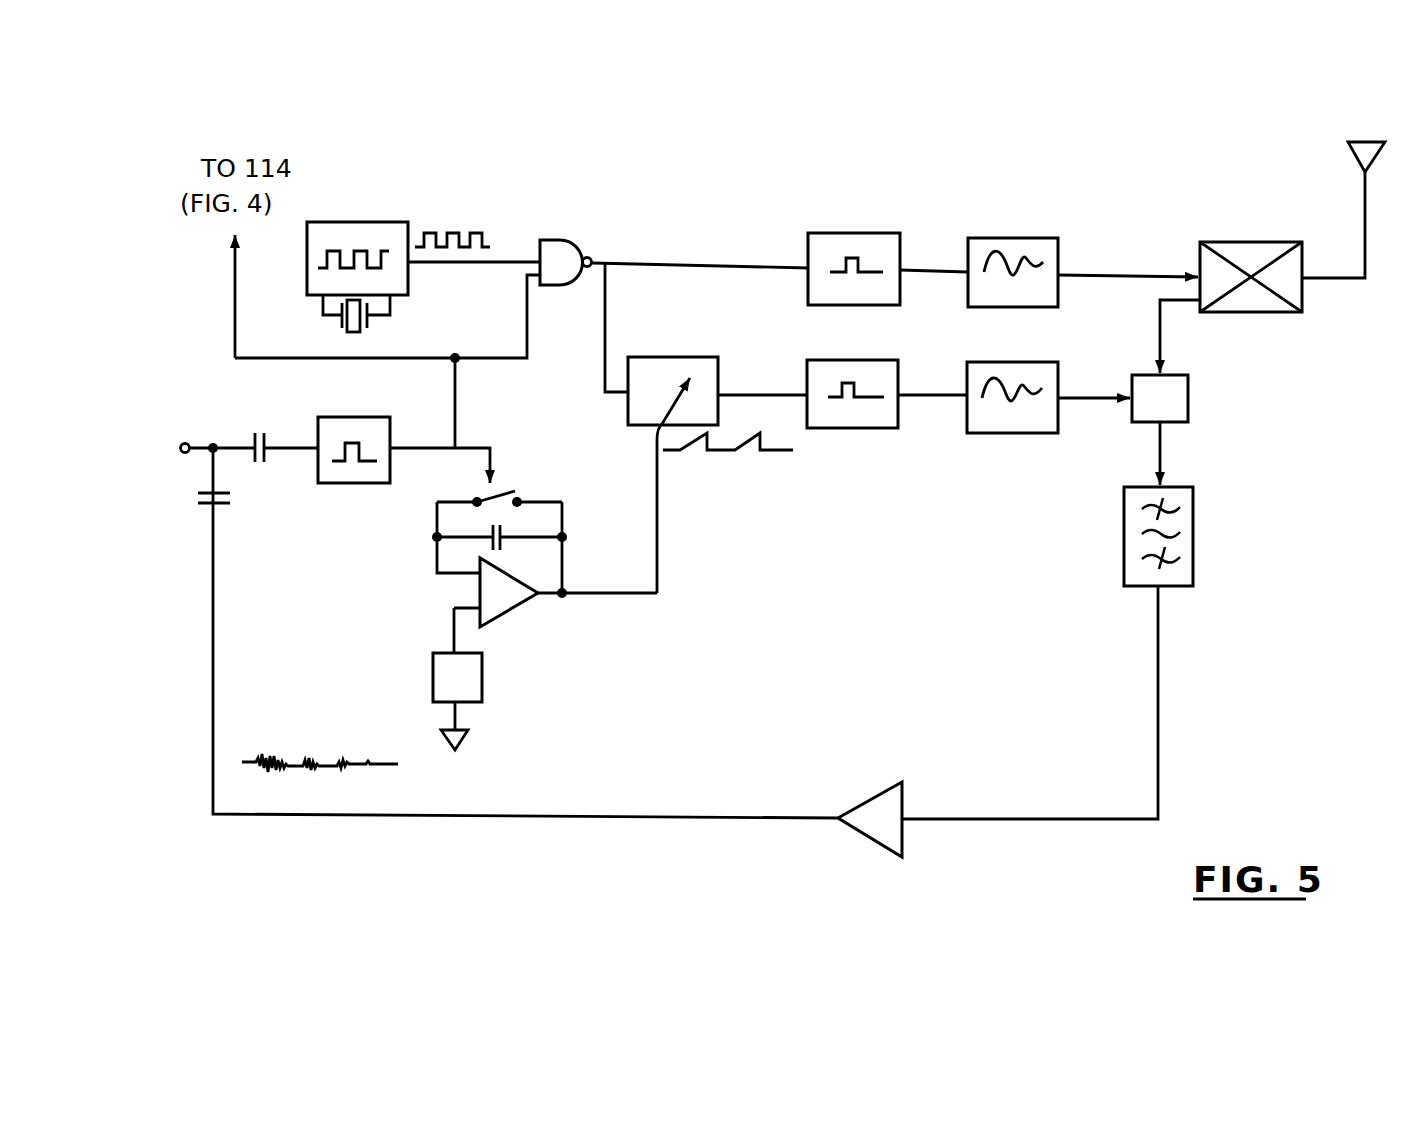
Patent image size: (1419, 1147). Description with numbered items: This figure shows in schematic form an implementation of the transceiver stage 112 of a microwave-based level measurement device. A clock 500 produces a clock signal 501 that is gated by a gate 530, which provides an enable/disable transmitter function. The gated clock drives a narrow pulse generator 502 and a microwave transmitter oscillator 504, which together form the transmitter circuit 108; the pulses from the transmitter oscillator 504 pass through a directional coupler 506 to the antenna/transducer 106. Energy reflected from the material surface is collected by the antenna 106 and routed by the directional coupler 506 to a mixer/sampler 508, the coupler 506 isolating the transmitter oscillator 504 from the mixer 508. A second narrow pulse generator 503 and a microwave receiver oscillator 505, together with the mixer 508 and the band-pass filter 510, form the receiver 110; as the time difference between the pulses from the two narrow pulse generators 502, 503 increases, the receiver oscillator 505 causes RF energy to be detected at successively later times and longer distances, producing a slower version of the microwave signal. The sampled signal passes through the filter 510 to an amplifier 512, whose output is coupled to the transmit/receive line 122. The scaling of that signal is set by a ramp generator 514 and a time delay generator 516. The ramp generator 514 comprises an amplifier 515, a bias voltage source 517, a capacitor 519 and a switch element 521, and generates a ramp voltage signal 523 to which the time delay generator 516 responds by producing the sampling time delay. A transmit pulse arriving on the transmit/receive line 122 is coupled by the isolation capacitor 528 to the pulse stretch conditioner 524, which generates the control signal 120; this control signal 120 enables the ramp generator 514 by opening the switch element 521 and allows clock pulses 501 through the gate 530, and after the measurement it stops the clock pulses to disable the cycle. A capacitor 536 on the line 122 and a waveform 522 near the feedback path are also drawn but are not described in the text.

The antenna/transducer 106 is at (1348, 153).
The transmitter circuit 108 is at (688, 218).
The receiver 110 is at (960, 494).
The transceiver stage 112 is at (288, 827).
The control signal 120 is at (458, 447).
The transmit/receive line 122 is at (185, 443).
The clock 500 is at (390, 222).
The clock signal 501 is at (487, 233).
The narrow pulse generator 502 is at (870, 233).
The second narrow pulse generator 503 is at (847, 360).
The microwave transmitter oscillator 504 is at (1047, 238).
The microwave receiver oscillator 505 is at (1002, 362).
The directional coupler 506 is at (1272, 242).
The mixer/sampler 508 is at (1190, 401).
The band-pass filter 510 is at (1193, 551).
The amplifier 512 is at (902, 795).
The ramp generator 514 is at (546, 650).
The amplifier 515 is at (528, 602).
The time delay generator 516 is at (670, 357).
The bias voltage source 517 is at (482, 677).
The capacitor 519 is at (502, 545).
The switch element 521 is at (526, 476).
The feedback signal waveform 522 is at (316, 728).
The ramp voltage signal 523 is at (763, 450).
The pulse stretch conditioner 524 is at (367, 417).
The isolation capacitor 528 is at (264, 440).
The gate 530 is at (558, 287).
The capacitor 536 is at (222, 507).